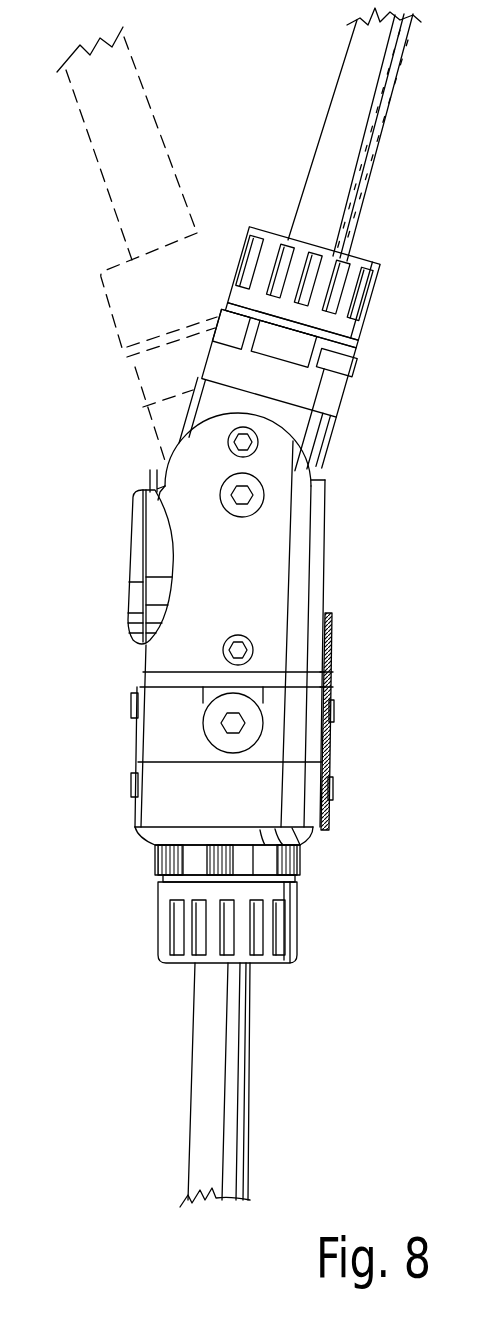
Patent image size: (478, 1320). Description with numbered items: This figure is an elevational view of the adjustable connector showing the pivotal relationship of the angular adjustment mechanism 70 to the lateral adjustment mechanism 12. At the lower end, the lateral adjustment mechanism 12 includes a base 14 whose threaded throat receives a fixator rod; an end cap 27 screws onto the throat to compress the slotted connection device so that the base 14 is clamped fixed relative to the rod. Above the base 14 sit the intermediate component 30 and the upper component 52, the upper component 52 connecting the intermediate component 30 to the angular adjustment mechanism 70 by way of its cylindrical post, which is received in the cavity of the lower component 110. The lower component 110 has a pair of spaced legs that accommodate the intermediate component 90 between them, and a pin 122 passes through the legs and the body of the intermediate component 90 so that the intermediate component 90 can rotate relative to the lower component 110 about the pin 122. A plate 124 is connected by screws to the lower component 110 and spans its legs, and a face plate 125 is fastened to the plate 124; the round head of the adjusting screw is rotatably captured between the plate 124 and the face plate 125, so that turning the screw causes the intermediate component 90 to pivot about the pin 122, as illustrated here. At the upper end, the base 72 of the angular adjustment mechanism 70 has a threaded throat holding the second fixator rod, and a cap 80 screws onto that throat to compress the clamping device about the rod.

The lateral adjustment mechanism 12 is at (291, 910).
The base 14 is at (329, 819).
The end cap 27 is at (269, 918).
The intermediate component 30 is at (329, 749).
The upper component 52 is at (331, 690).
The angular adjustment mechanism 70 is at (250, 351).
The base 72 is at (349, 383).
The cap 80 is at (199, 240).
The intermediate component 90 is at (219, 455).
The lower component 110 is at (324, 529).
The pin 122 is at (235, 516).
The plate 124 is at (150, 476).
The face plate 125 is at (133, 522).